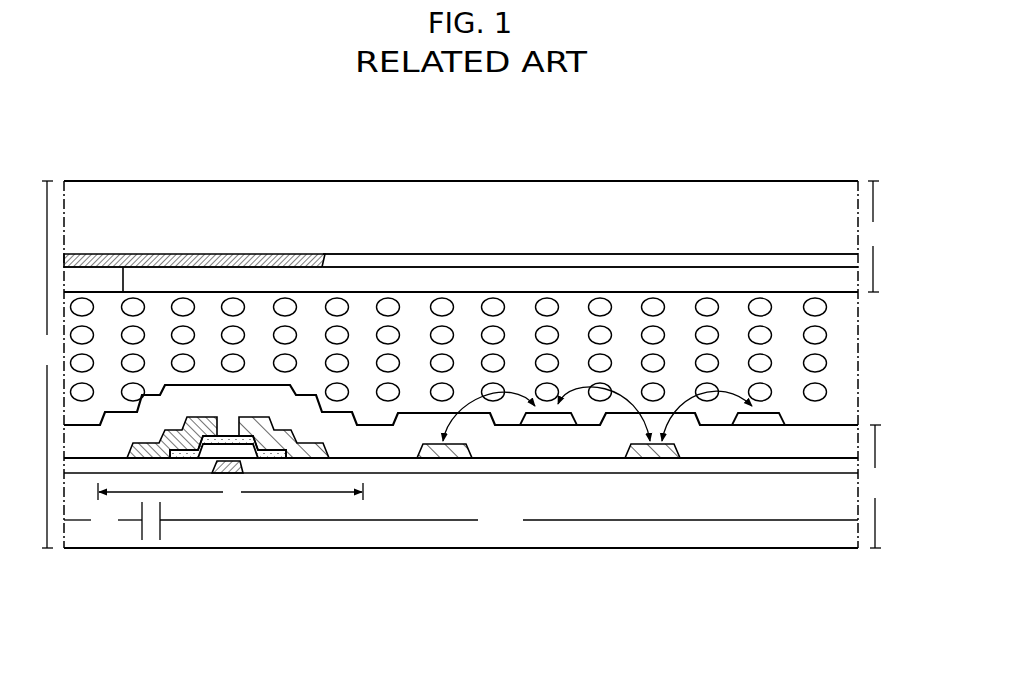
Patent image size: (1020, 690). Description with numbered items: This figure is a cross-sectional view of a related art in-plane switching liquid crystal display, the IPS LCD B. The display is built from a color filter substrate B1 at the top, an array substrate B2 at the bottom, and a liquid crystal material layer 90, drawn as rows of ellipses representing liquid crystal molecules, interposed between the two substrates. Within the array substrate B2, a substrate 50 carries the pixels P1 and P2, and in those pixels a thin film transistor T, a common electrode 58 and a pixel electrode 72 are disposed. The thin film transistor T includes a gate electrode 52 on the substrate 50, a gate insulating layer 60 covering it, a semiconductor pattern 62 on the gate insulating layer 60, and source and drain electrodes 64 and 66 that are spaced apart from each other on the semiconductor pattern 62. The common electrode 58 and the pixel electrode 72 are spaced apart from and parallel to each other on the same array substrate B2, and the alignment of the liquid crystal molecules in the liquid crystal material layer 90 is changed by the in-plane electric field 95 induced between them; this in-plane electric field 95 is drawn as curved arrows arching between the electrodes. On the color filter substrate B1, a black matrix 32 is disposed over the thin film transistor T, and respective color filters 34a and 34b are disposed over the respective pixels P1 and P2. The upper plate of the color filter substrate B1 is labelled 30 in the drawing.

The upper substrate 30 is at (489, 226).
The black matrix 32 is at (253, 256).
The color filter 34a is at (107, 277).
The color filter 34b is at (735, 262).
The liquid crystal material layer 90 is at (842, 323).
The electric field 95 is at (625, 396).
The substrate 50 is at (801, 504).
The gate electrode 52 is at (222, 474).
The gate insulating layer 60 is at (420, 474).
The semiconductor pattern 62 is at (278, 458).
The source electrode 64 is at (205, 417).
The drain electrode 66 is at (250, 417).
The common electrode 58 is at (455, 459).
The pixel electrode 72 is at (548, 426).
The IPS LCD B is at (46, 364).
The color filter substrate B1 is at (876, 236).
The array substrate B2 is at (877, 486).
The thin film transistor T is at (230, 492).
The pixel P1 is at (112, 521).
The pixel P2 is at (509, 520).